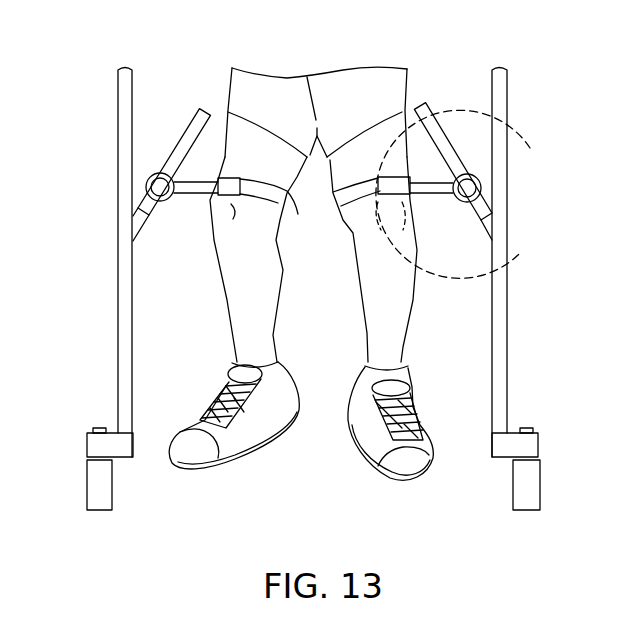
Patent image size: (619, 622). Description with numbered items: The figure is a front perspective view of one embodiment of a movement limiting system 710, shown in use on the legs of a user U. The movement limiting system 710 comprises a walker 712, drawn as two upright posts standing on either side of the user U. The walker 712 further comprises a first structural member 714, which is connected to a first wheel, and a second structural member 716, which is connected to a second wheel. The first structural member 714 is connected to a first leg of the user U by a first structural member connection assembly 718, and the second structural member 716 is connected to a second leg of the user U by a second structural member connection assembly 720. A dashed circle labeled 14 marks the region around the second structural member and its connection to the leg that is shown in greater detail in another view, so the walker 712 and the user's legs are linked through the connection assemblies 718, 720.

The movement limiting system 710 is at (120, 47).
The walker 712 is at (112, 267).
The first structural member 714 is at (143, 208).
The second structural member 716 is at (473, 205).
The first structural member connection assembly 718 is at (435, 218).
The second structural member connection assembly 720 is at (193, 218).
The detail region of FIG. 14 is at (530, 148).
The user U is at (395, 352).